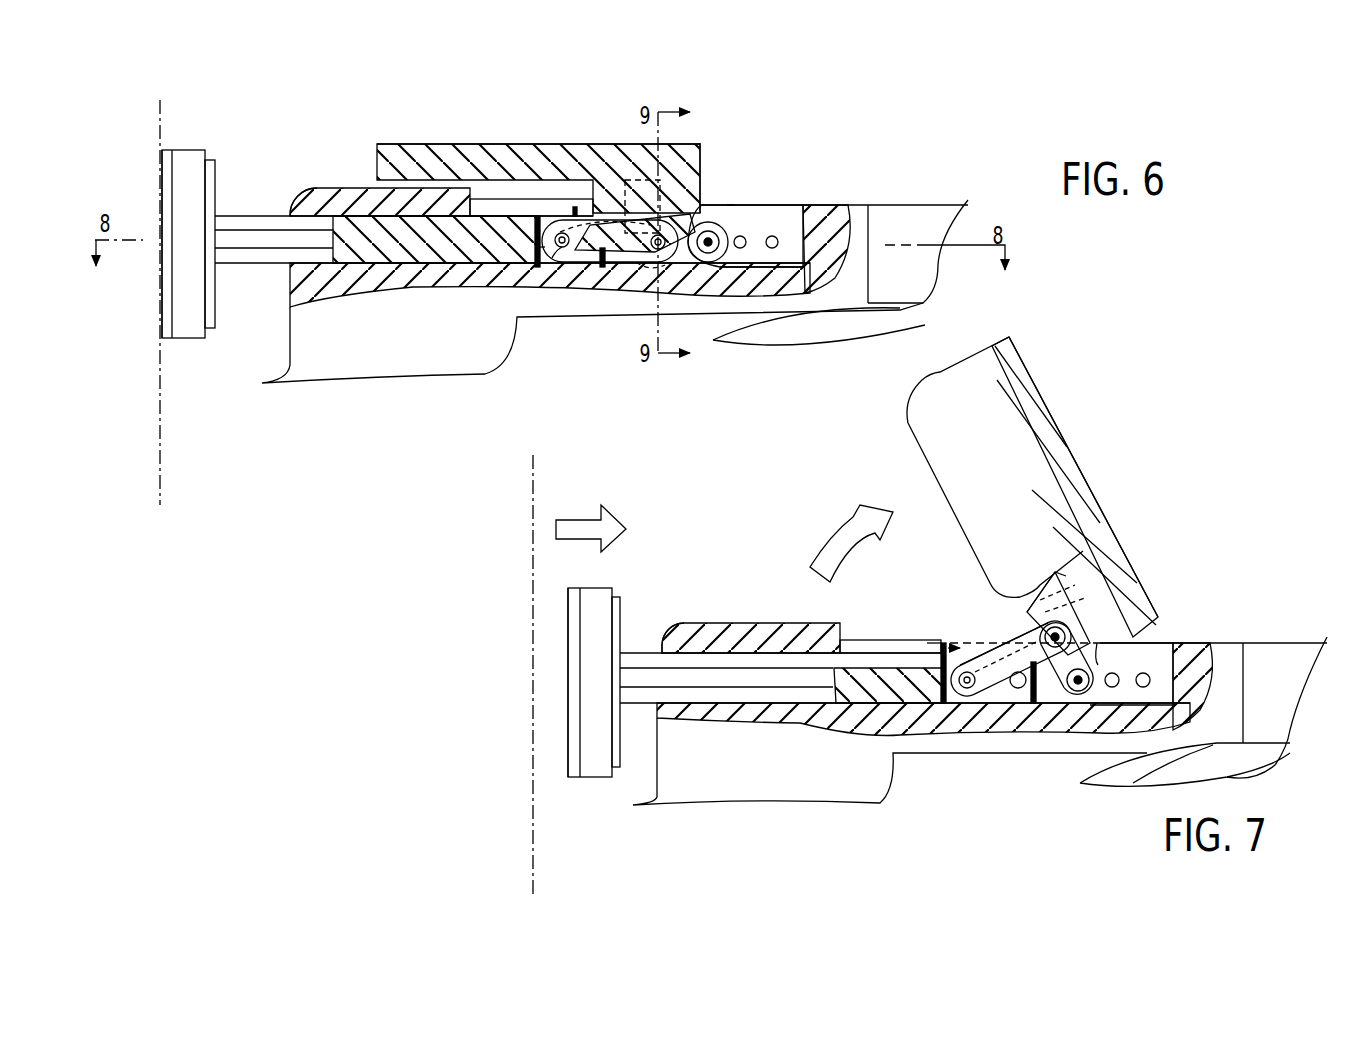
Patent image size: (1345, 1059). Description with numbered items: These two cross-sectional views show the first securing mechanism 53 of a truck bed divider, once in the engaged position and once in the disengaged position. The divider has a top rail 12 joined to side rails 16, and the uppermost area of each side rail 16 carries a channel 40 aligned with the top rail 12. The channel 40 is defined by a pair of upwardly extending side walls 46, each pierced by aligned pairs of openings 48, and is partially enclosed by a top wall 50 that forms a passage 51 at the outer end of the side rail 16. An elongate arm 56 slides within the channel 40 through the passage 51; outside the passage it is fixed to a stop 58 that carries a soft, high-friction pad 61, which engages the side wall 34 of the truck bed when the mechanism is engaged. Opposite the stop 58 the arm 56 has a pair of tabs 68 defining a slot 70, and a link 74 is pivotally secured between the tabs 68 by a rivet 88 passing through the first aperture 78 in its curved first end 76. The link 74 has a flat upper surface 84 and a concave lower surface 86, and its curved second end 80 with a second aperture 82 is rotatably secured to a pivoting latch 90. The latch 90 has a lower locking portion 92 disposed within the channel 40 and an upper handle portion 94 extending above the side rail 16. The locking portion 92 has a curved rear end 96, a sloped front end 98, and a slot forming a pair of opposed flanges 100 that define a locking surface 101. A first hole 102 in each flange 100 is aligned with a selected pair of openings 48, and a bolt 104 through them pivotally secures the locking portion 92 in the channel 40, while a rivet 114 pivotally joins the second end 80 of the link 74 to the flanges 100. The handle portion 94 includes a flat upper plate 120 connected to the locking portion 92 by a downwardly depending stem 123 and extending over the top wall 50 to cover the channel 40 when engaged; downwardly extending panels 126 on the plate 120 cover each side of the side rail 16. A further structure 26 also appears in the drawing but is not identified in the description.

In FIG. 6, the top rail 12 is at (915, 200).
In FIG. 6, the side rails 16 is at (320, 377).
In FIG. 7, the side rails 16 is at (785, 800).
In FIG. 6, the rib 26 is at (840, 320).
In FIG. 6, the side walls 34 is at (170, 458).
In FIG. 7, the side walls 34 is at (545, 851).
In FIG. 6, the first channel 40 is at (786, 212).
In FIG. 7, the first channel 40 is at (1165, 643).
In FIG. 6, the side walls 46 is at (773, 235).
In FIG. 6, the openings 48 is at (741, 235).
In FIG. 6, the top wall 50 is at (320, 197).
In FIG. 7, the top wall 50 is at (730, 623).
In FIG. 6, the passage 51 is at (290, 213).
In FIG. 7, the passage 51 is at (652, 708).
In FIG. 6, the first securing mechanism 53 is at (347, 143).
In FIG. 6, the elongate arm 56 is at (237, 220).
In FIG. 7, the elongate arm 56 is at (637, 660).
In FIG. 6, the stop 58 is at (192, 162).
In FIG. 7, the stop 58 is at (598, 600).
In FIG. 6, the pad 61 is at (163, 150).
In FIG. 7, the pad 61 is at (568, 705).
In FIG. 7, the tabs 68 is at (960, 700).
In FIG. 7, the slot 70 is at (945, 640).
In FIG. 6, the link 74 is at (600, 267).
In FIG. 7, the link 74 is at (927, 643).
In FIG. 6, the first end 76 is at (555, 258).
In FIG. 6, the first aperture 78 is at (570, 260).
In FIG. 6, the second end 80 is at (673, 267).
In FIG. 6, the second aperture 82 is at (643, 267).
In FIG. 6, the flat upper surface 84 is at (632, 213).
In FIG. 7, the flat upper surface 84 is at (1000, 633).
In FIG. 6, the concave lower surface 86 is at (617, 262).
In FIG. 7, the concave lower surface 86 is at (1025, 633).
In FIG. 6, the rivet 88 is at (550, 230).
In FIG. 6, the pivoting latch 90 is at (420, 128).
In FIG. 7, the pivoting latch 90 is at (1138, 466).
In FIG. 6, the lower locking portion 92 is at (727, 203).
In FIG. 7, the lower locking portion 92 is at (1107, 665).
In FIG. 7, the upper handle portion 94 is at (1042, 530).
In FIG. 6, the curved rear end 96 is at (745, 268).
In FIG. 7, the curved rear end 96 is at (1097, 703).
In FIG. 7, the sloped front end 98 is at (1040, 593).
In FIG. 6, the flanges 100 is at (693, 263).
In FIG. 7, the flanges 100 is at (1013, 690).
In FIG. 7, the locking surface 101 is at (1052, 570).
In FIG. 7, the first hole 102 is at (1045, 700).
In FIG. 6, the bolt 104 is at (710, 228).
In FIG. 7, the bolt 104 is at (1093, 663).
In FIG. 6, the rivet 114 is at (625, 180).
In FIG. 6, the flat upper plate 120 is at (477, 142).
In FIG. 7, the flat upper plate 120 is at (1110, 518).
In FIG. 6, the stem 123 is at (612, 190).
In FIG. 7, the panels 126 is at (932, 462).